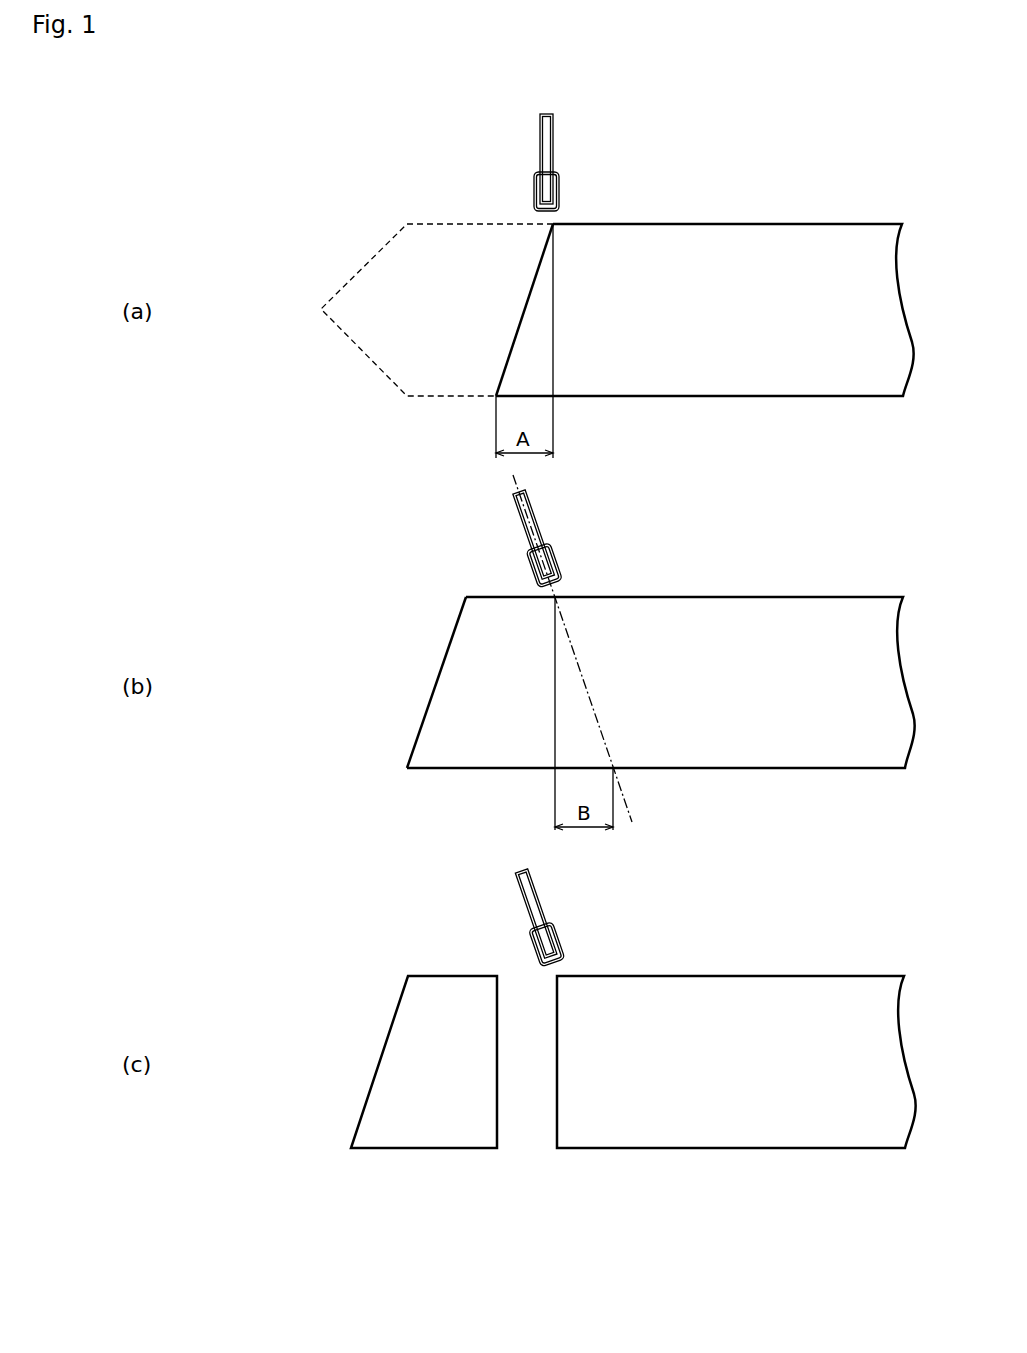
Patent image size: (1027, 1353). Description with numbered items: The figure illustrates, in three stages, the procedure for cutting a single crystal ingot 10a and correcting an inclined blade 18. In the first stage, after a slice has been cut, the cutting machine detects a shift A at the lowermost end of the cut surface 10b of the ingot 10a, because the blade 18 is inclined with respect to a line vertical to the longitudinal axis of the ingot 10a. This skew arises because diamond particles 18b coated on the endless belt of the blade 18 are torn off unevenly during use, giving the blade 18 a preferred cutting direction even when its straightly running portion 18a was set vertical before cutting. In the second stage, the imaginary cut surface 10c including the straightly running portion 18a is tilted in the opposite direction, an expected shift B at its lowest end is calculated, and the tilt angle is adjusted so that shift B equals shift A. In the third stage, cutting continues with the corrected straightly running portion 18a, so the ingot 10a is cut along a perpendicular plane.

The ingot 10a is at (775, 224).
The cut surface 10b is at (530, 293).
The imaginary cut surface 10c is at (583, 683).
The blade 18 is at (583, 532).
The straightly running portion 18a is at (553, 148).
The diamond particles 18b is at (560, 188).